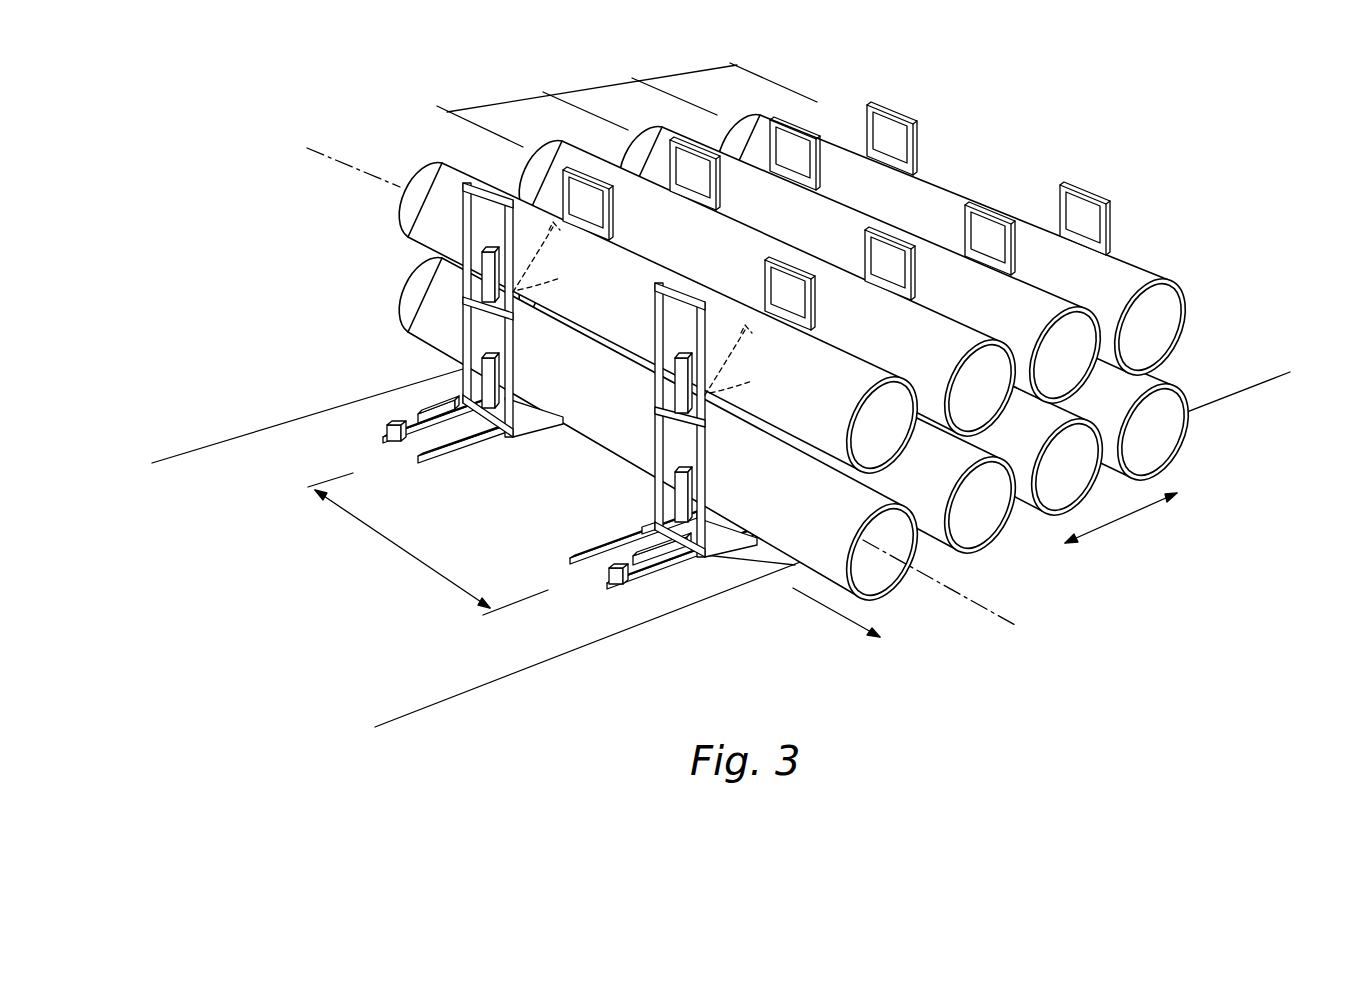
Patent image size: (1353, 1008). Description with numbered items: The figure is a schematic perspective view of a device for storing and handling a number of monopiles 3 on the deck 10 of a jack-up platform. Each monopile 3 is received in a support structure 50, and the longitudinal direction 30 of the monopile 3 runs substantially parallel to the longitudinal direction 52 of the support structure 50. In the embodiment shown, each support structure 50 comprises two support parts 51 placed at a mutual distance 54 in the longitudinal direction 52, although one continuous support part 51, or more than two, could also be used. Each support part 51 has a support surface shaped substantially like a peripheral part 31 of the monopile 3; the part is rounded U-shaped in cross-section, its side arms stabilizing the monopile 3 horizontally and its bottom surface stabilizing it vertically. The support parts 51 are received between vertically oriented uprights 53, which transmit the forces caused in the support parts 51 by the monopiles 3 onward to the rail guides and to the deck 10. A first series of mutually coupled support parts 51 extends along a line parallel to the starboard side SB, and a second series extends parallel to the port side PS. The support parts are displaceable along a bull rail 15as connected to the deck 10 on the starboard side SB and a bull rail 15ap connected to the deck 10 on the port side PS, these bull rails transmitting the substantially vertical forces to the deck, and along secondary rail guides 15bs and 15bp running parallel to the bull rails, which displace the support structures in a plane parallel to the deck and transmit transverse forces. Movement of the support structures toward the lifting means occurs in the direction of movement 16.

The monopile 3 is at (823, 388).
The deck 10 is at (332, 636).
The bull rail guide 15as is at (386, 441).
The secondary rail guide 15bs is at (422, 462).
The bull rail 15ap is at (609, 583).
The secondary rail guide 15bp is at (569, 561).
The direction of movement 16 is at (1123, 517).
The longitudinal direction 30 is at (346, 162).
The peripheral part 31 is at (563, 277).
The support structure 50 is at (493, 103).
The support part 51 is at (482, 285).
The longitudinal direction 52 is at (836, 613).
The upright 53 is at (463, 217).
The mutual distance 54 is at (428, 544).
The starboard side SB is at (210, 445).
The port side PS is at (445, 700).